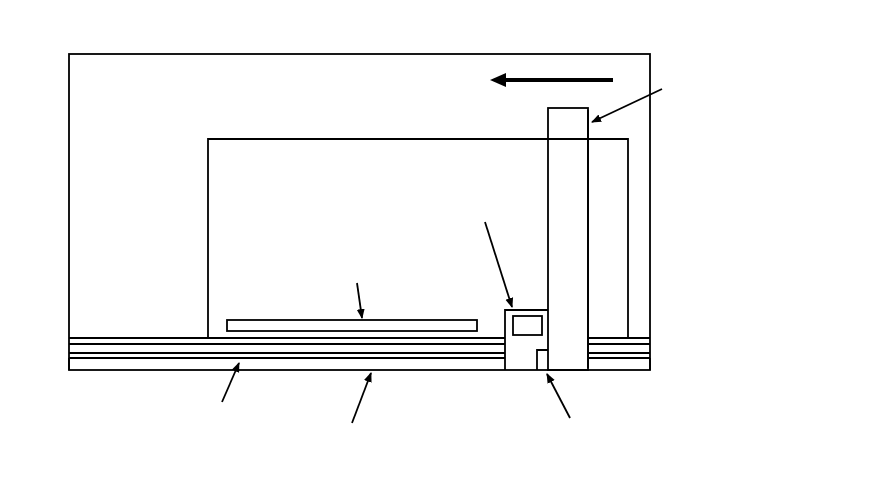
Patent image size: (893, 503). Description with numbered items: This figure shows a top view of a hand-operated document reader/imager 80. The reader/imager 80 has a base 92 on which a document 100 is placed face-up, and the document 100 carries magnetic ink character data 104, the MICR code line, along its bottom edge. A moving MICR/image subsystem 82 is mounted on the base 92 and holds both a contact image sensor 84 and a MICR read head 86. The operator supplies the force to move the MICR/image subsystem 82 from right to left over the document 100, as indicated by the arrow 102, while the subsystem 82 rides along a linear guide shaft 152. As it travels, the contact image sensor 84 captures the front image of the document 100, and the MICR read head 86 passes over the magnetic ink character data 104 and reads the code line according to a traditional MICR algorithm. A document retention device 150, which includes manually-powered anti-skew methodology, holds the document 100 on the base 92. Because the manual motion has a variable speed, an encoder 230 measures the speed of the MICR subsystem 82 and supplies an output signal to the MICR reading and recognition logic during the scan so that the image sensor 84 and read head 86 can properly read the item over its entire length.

The hand-operated document reader/imager 80 is at (232, 33).
The base 92 is at (628, 54).
The arrow 102 is at (540, 78).
The document 100 is at (208, 166).
The magnetic ink character data 104 is at (282, 318).
The linear guide shaft 152 is at (97, 362).
The document retention device 150 is at (298, 372).
The MICR read head 86 is at (522, 336).
The encoder 230 is at (537, 372).
The moving MICR/image subsystem 82 is at (540, 125).
The contact image sensor 84 is at (588, 215).